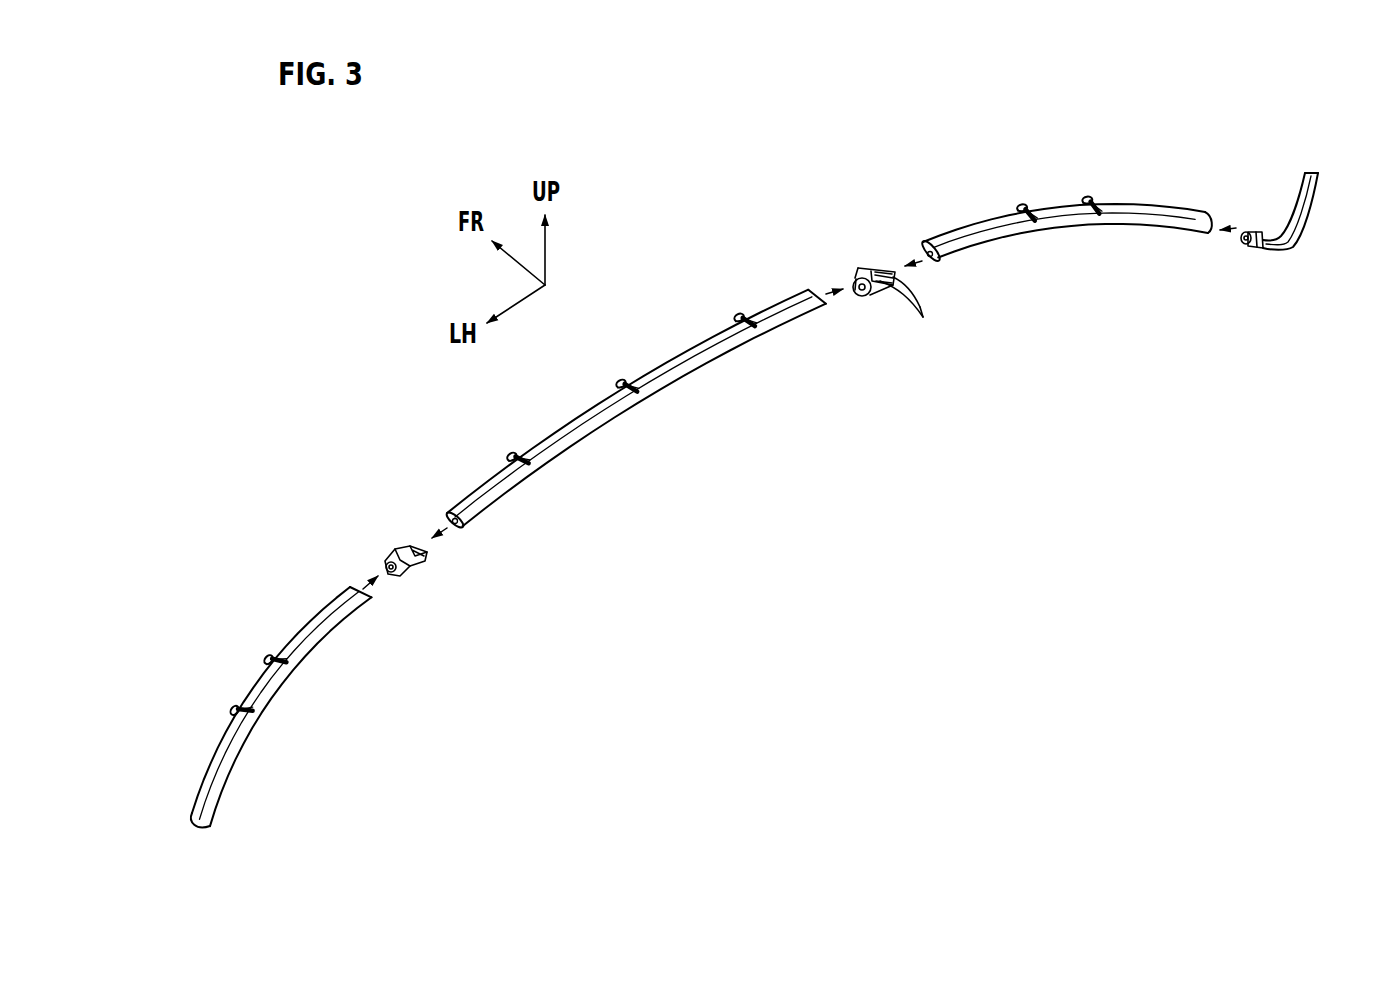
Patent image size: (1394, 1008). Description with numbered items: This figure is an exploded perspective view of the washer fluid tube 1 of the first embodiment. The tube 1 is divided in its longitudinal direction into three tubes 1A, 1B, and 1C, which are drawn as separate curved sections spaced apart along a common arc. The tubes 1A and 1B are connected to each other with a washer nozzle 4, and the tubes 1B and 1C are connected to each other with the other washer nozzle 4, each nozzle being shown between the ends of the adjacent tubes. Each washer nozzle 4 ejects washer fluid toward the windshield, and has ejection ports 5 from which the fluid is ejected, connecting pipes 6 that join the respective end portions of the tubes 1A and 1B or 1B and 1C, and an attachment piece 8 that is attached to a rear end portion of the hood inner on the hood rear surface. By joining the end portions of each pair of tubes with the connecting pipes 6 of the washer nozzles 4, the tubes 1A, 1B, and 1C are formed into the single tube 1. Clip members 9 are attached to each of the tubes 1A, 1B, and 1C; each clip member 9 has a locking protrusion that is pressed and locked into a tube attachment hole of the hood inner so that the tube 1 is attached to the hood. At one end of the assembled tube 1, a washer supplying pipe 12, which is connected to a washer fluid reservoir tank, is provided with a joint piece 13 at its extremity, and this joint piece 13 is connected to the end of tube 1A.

The tube 1 is at (826, 146).
The tube 1A is at (1158, 212).
The tube 1B is at (680, 356).
The tube 1C is at (318, 622).
The washer nozzle 4 is at (871, 297).
The ejection port 5 is at (922, 318).
The connecting pipe 6 is at (857, 296).
The attachment piece 8 is at (869, 267).
The clip member 9 is at (1097, 222).
The washer supplying pipe 12 is at (1311, 210).
The joint piece 13 is at (1250, 248).